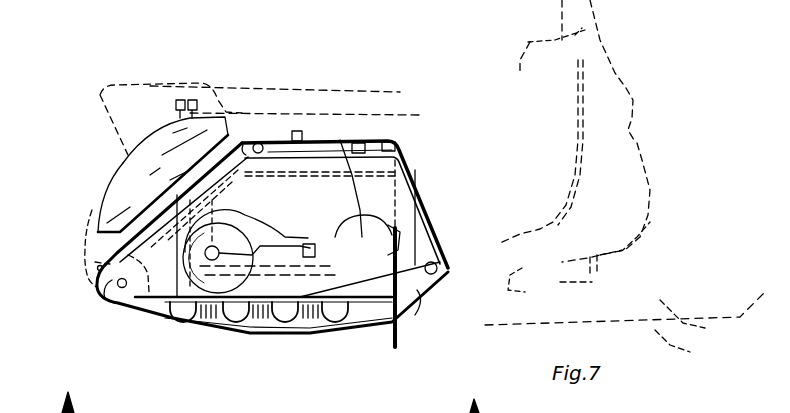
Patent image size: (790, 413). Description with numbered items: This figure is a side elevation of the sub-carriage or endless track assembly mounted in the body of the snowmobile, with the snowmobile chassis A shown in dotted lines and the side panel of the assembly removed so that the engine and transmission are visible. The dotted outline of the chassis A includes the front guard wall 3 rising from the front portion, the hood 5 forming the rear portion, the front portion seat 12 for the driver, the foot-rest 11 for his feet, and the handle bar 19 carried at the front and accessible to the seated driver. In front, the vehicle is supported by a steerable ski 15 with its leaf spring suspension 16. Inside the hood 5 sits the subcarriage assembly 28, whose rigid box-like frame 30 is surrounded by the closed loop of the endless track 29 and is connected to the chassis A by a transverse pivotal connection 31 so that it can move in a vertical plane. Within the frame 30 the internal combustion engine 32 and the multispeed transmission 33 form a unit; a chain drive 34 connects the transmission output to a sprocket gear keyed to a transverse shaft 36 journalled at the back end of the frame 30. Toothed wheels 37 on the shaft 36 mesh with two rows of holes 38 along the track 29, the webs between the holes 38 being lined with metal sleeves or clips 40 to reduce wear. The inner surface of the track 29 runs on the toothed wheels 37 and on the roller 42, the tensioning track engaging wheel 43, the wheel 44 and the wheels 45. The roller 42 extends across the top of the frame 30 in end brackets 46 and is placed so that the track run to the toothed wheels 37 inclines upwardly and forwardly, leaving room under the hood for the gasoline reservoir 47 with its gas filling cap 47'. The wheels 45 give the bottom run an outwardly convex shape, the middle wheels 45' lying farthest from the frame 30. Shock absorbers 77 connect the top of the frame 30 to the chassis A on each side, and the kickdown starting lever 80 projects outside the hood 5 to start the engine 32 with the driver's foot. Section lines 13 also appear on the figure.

The front guard wall 3 is at (634, 140).
The hood 5 is at (93, 209).
The foot-rest 11 is at (250, 52).
The front portion seat 12 is at (377, 93).
The section line 13 is at (297, 172).
The ski 15 is at (680, 350).
The leaf spring suspension 16 is at (387, 228).
The handle bar 19 is at (575, 131).
The subcarriage assembly 28 is at (371, 328).
The endless track 29 is at (418, 292).
The box-like frame 30 is at (127, 257).
The transverse pivotal connection 31 is at (430, 280).
The internal combustion engine 32 is at (340, 140).
The multispeed transmission 33 is at (244, 143).
The chain drive 34 is at (95, 197).
The shaft 36 is at (123, 310).
The toothed wheels 37 is at (100, 293).
The holes 38 is at (225, 412).
The metal sleeve or clip 40 is at (330, 412).
The roller 42 is at (252, 143).
The track engaging wheel 43 is at (408, 185).
The wheel 44 is at (435, 283).
The wheels 45 is at (345, 355).
The middle wheels 45' is at (283, 359).
The end brackets 46 is at (292, 242).
The gasoline reservoir 47 is at (146, 174).
The gas filling cap 47' is at (195, 63).
The shock absorbers 77 is at (171, 119).
The kickdown starting lever 80 is at (313, 248).
The vehicle body or chassis A is at (505, 324).